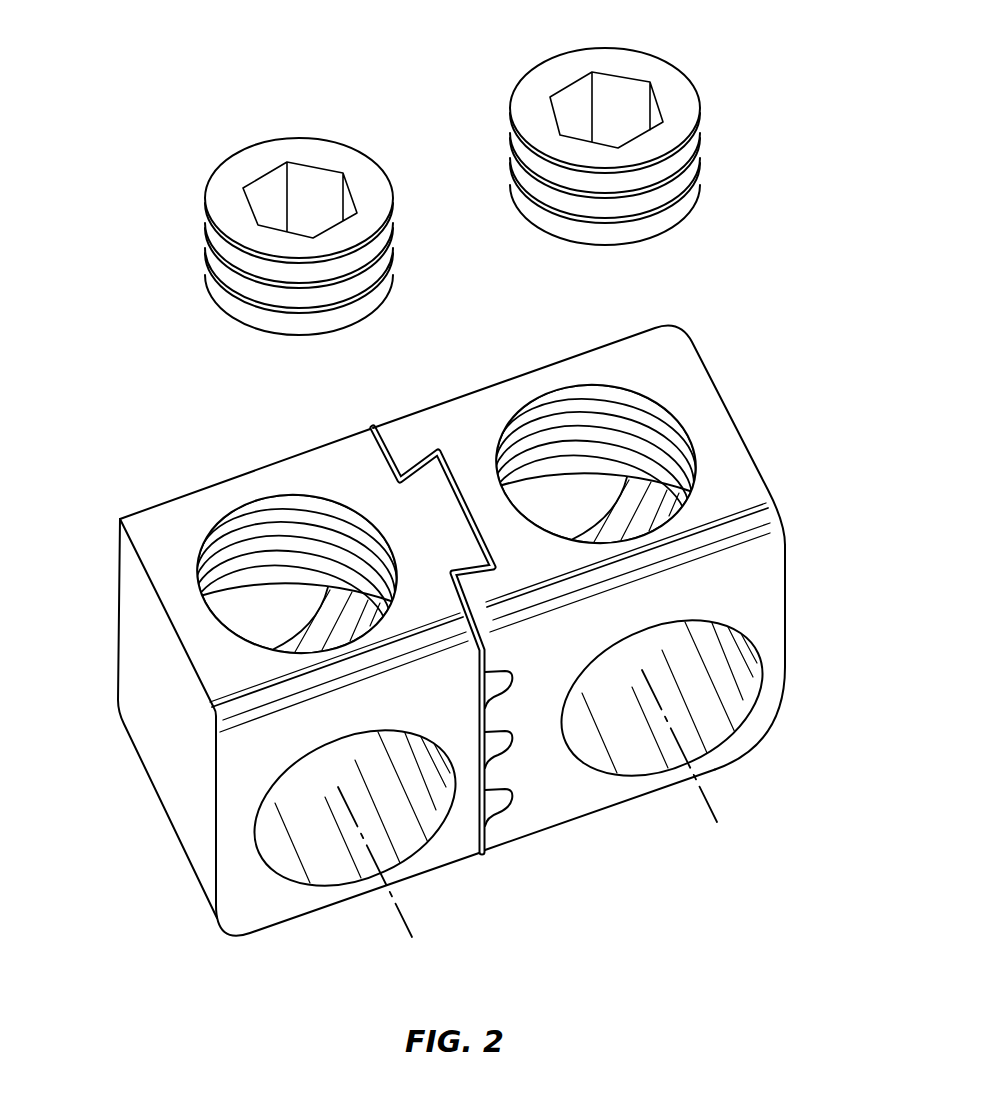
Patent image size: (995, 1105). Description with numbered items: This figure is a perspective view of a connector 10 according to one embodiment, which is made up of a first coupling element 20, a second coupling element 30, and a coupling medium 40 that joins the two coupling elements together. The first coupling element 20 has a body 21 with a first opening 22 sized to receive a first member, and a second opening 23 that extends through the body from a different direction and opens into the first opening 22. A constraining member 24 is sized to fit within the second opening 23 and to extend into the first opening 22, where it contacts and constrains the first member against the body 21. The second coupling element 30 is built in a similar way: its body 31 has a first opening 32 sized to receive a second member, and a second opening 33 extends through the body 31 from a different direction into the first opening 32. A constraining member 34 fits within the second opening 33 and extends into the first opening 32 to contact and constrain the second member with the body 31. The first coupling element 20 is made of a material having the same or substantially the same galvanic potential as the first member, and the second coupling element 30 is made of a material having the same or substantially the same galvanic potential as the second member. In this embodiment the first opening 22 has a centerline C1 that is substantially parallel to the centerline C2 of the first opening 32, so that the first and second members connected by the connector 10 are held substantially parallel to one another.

The connector 10 is at (776, 232).
The first coupling element 20 is at (118, 635).
The body 21 is at (160, 715).
The first opening 22 is at (318, 845).
The second opening 23 is at (233, 513).
The constraining member 24 is at (225, 192).
The second coupling element 30 is at (748, 447).
The body 31 is at (785, 593).
The first opening 32 is at (630, 750).
The second opening 33 is at (650, 397).
The constraining member 34 is at (675, 83).
The coupling medium 40 is at (502, 740).
The centerline C1 is at (390, 862).
The centerline C2 is at (695, 748).